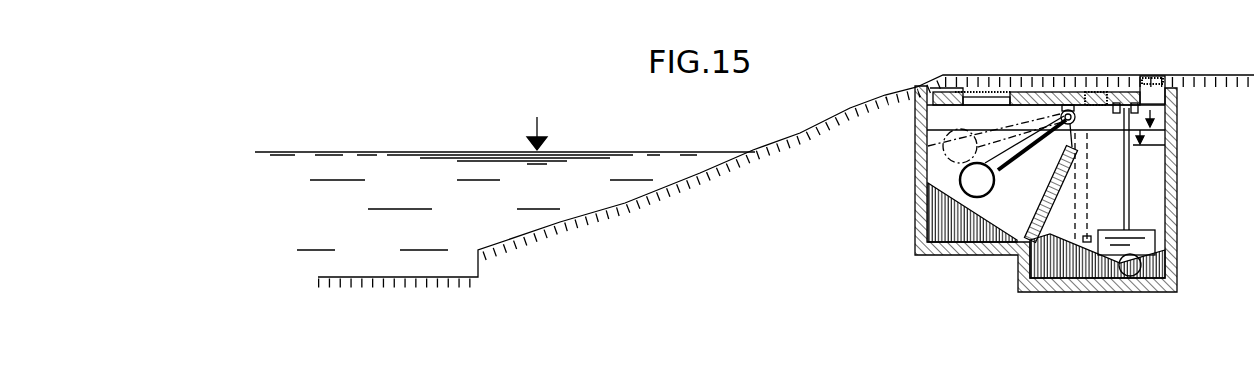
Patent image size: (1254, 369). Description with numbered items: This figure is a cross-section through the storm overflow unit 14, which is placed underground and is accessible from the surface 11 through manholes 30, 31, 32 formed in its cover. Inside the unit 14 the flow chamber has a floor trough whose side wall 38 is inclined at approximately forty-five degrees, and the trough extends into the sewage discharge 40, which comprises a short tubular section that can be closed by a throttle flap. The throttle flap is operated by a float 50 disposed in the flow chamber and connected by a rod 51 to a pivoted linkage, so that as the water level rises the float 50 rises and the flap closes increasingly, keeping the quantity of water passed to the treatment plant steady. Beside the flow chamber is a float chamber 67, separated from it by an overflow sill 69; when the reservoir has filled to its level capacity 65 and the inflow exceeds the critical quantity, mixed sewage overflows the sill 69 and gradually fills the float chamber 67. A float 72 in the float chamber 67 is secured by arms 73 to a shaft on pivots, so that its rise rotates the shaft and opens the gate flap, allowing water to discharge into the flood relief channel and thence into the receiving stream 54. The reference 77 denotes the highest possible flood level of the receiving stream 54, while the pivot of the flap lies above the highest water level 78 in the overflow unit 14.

The surface 11 is at (1054, 95).
The storm overflow unit 14 is at (896, 147).
The manhole 30 is at (990, 95).
The manhole 31 is at (1152, 75).
The manhole 32 is at (1098, 75).
The side wall 38 is at (1022, 258).
The sewage discharge 40 is at (1133, 268).
The float 50 is at (1140, 240).
The rod 51 is at (1125, 192).
The receiving stream 54 is at (327, 232).
The level capacity 65 is at (1158, 130).
The float chamber 67 is at (953, 113).
The overflow sill 69 is at (1047, 193).
The float 72 is at (967, 182).
The arms 73 is at (1018, 158).
The highest possible flood level 77 is at (538, 125).
The highest water level 78 is at (1150, 118).